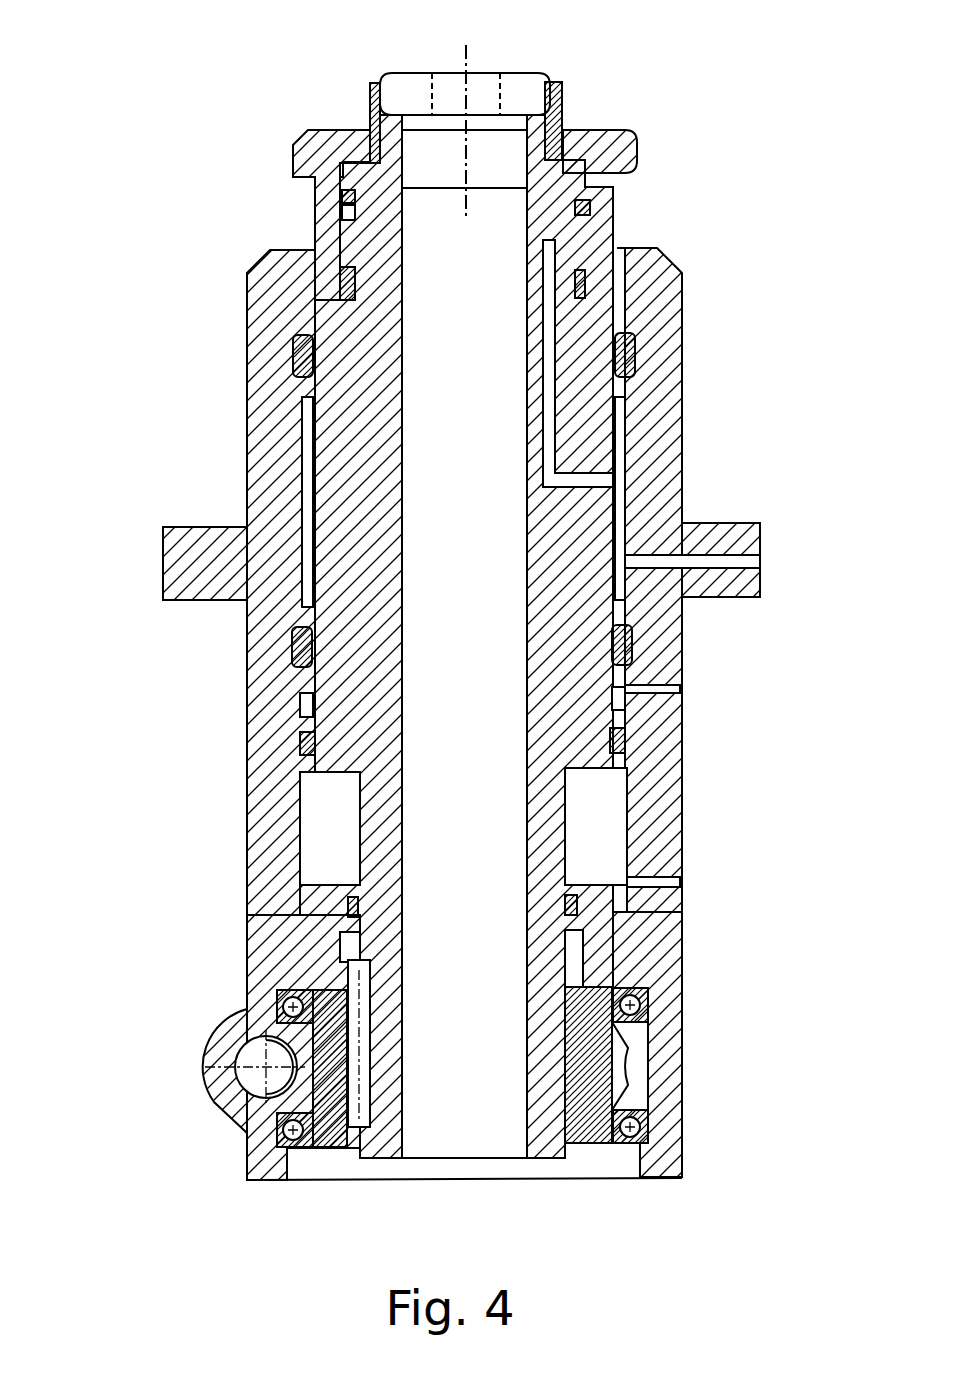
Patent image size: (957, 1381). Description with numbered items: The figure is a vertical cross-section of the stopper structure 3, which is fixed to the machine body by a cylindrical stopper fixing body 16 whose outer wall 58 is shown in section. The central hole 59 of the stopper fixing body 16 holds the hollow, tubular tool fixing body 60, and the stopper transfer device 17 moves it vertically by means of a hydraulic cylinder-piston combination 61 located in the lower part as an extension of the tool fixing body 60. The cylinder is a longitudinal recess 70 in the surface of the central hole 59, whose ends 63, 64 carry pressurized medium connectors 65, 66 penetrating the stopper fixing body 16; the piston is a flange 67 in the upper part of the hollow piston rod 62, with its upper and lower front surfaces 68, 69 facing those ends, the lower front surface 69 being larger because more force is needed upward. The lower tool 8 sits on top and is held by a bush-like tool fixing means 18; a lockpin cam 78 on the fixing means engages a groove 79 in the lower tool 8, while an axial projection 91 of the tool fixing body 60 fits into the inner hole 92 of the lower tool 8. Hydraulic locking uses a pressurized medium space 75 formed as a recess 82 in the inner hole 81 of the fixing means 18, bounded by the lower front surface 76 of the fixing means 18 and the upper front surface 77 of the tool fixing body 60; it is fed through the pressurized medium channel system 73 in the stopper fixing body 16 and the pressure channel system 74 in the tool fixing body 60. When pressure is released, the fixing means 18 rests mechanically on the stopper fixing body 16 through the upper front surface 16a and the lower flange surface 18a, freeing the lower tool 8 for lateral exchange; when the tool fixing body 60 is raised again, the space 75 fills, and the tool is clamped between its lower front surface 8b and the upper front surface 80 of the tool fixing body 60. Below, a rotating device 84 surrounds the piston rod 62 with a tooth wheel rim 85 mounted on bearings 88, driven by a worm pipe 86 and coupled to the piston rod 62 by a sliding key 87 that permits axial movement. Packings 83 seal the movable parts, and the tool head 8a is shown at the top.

The stopper structure 3 is at (700, 257).
The lower tool 8 is at (414, 100).
The shaft head 8a is at (458, 75).
The lower front surface of the lower tool 8b is at (376, 112).
The stopper fixing body 16 is at (248, 416).
The upper front surface of the stopper fixing body 16a is at (592, 258).
The stopper transfer device 17 is at (190, 951).
The tool fixing means 18 is at (272, 140).
The lower surface of the flange part 18a is at (625, 176).
The housing body 58 is at (655, 340).
The central hole 59 is at (332, 585).
The tool fixing body 60 is at (340, 563).
The hydraulic cylinder-piston combination 61 is at (318, 840).
The piston rod 62 is at (545, 1175).
The upper end of the recess 63 is at (630, 688).
The lower end of the recess 64 is at (640, 882).
The pressurized medium connector 65 is at (650, 690).
The pressurized medium connector 66 is at (625, 895).
The flange 67 is at (302, 745).
The upper front surface 68 is at (305, 702).
The lower front surface 69 is at (322, 775).
The recess 70 is at (640, 840).
The pressurized medium channel system 73 is at (622, 513).
The pressure channel system 74 is at (555, 418).
The pressurized medium space 75 is at (640, 268).
The lower front surface 76 is at (592, 268).
The upper front surface 77 is at (556, 247).
The lockpin cam 78 is at (600, 165).
The groove 79 is at (563, 130).
The upper front surface of the tool fixing body 80 is at (332, 203).
The inner hole 81 is at (300, 397).
The recess 82 is at (345, 218).
The packings 83 is at (340, 195).
The rotating device 84 is at (214, 1108).
The tooth wheel rim 85 is at (632, 1062).
The worm pipe 86 is at (266, 1056).
The sliding key 87 is at (358, 1152).
The bearings 88 is at (642, 1000).
The axial projection 91 is at (560, 95).
The inner hole 92 is at (556, 110).